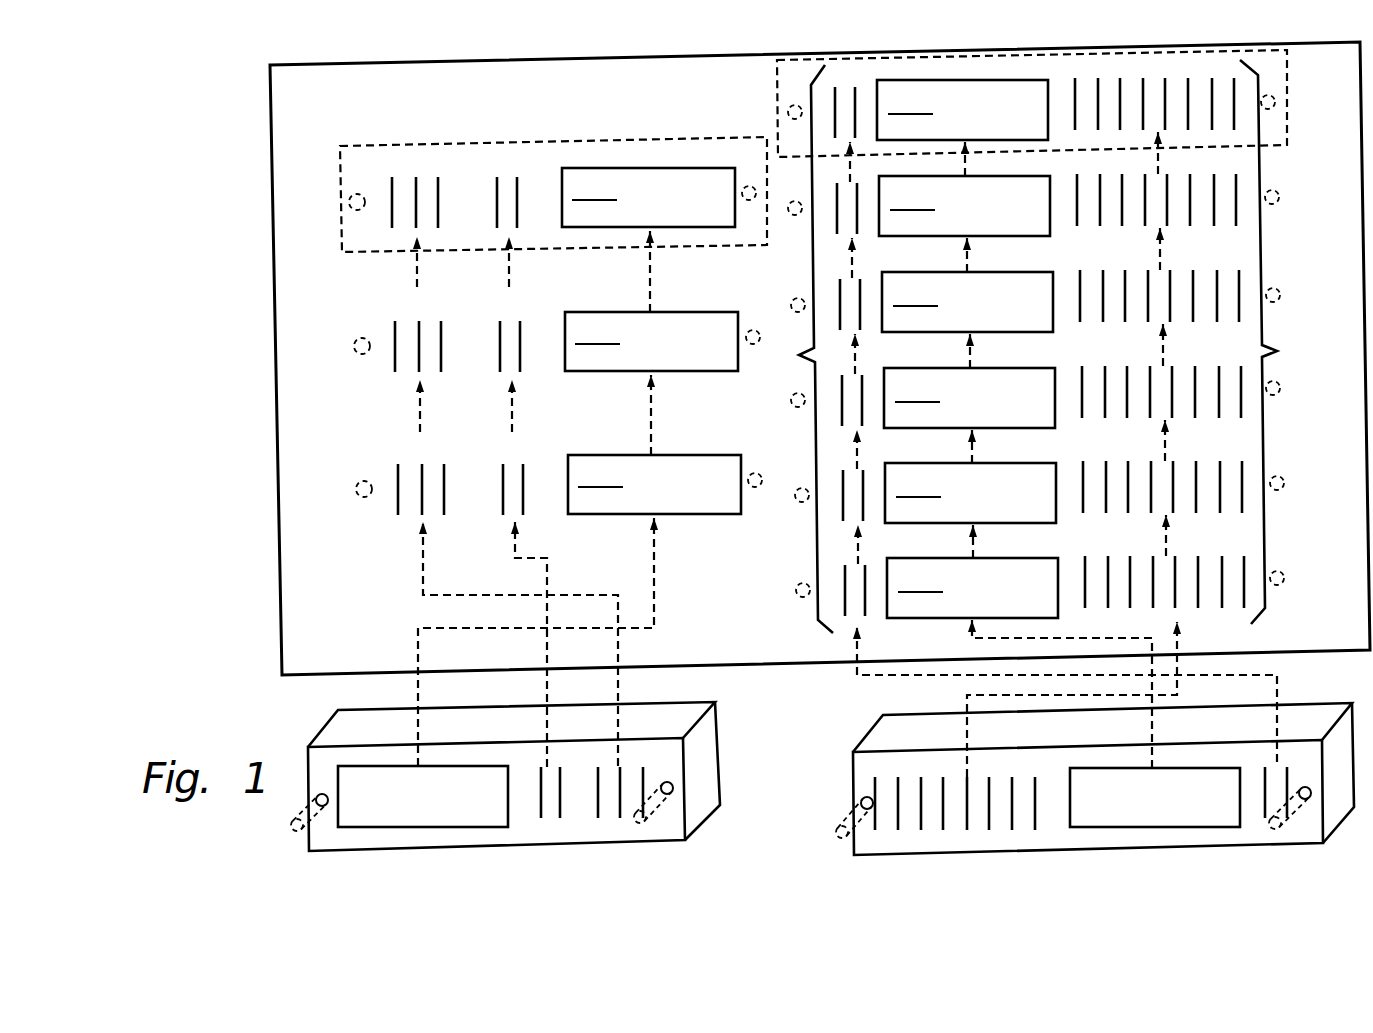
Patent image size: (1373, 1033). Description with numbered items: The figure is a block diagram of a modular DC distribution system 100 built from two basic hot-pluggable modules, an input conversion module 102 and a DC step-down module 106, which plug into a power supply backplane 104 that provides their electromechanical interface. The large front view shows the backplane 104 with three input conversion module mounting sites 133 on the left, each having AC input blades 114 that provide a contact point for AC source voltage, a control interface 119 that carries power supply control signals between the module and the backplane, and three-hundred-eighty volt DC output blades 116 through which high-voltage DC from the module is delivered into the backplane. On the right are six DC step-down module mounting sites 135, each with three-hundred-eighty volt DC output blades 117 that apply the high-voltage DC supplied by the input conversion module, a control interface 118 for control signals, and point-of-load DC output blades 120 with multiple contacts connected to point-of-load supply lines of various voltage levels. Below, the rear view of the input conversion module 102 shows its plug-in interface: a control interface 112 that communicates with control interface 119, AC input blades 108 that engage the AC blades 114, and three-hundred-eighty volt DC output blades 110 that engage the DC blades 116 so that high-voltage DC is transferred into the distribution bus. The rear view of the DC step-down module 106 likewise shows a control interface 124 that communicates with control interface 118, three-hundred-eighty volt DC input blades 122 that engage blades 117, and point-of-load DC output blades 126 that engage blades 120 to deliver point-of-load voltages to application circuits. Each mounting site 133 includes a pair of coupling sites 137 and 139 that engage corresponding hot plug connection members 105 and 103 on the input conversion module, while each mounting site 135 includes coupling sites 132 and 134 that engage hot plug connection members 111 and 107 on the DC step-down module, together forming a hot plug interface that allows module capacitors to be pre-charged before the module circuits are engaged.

The modular DC distribution system 100 is at (839, 45).
The input conversion module 102 is at (683, 702).
The hot plug connection member 103 is at (296, 826).
The power supply backplane 104 is at (921, 56).
The hot plug connection member 105 is at (655, 828).
The DC step-down module 106 is at (1318, 703).
The hot plug connection member 107 is at (857, 840).
The AC input blades 108 is at (611, 830).
The 380 volts DC output blades 110 is at (541, 828).
The hot plug connection member 111 is at (1290, 831).
The control interface 112 is at (392, 800).
The AC input blades 114 is at (391, 473).
The 380 volts DC output blades 116 is at (533, 212).
The 380 volts DC output blades 117 is at (791, 349).
The control interface 118 is at (967, 349).
The control interface 119 is at (558, 341).
The point-of-load DC output blades 120 is at (1286, 342).
The 380 volts DC input blades 122 is at (1252, 842).
The control interface 124 is at (1123, 801).
The point-of-load DC output blades 126 is at (938, 844).
The coupling site 132 is at (792, 105).
The input conversion module mounting site 133 is at (527, 146).
The coupling site 134 is at (1268, 94).
The DC step-down module mounting site 135 is at (1080, 52).
The coupling site 137 is at (357, 194).
The coupling site 139 is at (749, 186).